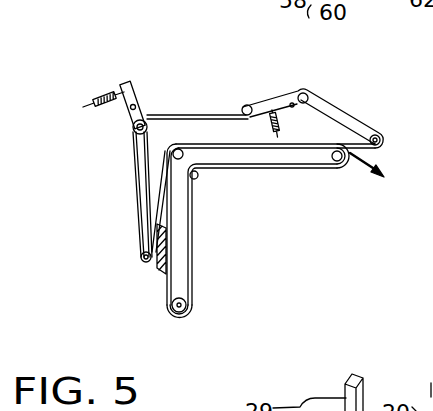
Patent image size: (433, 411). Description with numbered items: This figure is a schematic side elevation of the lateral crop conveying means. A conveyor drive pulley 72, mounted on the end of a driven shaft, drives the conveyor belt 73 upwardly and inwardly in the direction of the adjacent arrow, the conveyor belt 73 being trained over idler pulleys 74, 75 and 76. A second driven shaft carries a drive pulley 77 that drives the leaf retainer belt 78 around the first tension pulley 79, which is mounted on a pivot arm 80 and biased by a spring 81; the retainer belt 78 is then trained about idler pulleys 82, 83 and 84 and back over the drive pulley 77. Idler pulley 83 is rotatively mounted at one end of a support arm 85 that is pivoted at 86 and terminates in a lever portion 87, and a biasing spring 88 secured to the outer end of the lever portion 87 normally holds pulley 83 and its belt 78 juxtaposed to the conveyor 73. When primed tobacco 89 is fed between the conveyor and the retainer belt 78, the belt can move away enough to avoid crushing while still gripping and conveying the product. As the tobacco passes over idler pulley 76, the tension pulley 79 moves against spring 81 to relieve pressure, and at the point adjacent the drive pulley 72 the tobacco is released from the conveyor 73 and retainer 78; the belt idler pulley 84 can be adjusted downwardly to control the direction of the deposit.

The conveyor drive pulley 72 is at (336, 165).
The conveyor belt 73 is at (268, 167).
The idler pulley 74 is at (196, 180).
The idler pulley 75 is at (186, 308).
The idler pulley 76 is at (177, 150).
The drive pulley 77 is at (311, 96).
The leaf retainer belt 78 is at (352, 113).
The first tension pulley 79 is at (248, 105).
The pivot arm 80 is at (304, 92).
The spring 81 is at (281, 124).
The idler pulley 82 is at (154, 116).
The idler pulley 83 is at (143, 262).
The belt idler pulley 84 is at (383, 137).
The support arm 85 is at (141, 186).
The pivot 86 is at (132, 133).
The lever portion 87 is at (134, 86).
The biasing spring 88 is at (113, 90).
The primed tobacco 89 is at (160, 280).